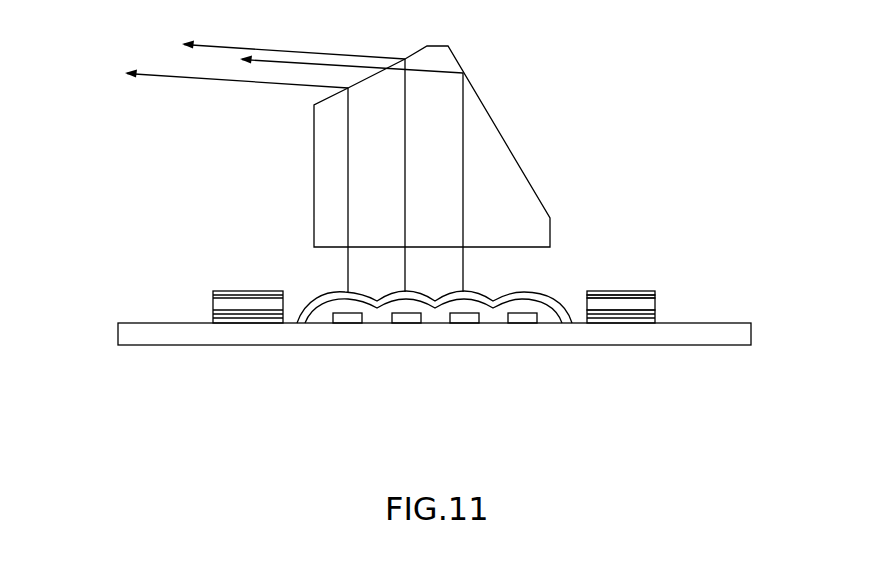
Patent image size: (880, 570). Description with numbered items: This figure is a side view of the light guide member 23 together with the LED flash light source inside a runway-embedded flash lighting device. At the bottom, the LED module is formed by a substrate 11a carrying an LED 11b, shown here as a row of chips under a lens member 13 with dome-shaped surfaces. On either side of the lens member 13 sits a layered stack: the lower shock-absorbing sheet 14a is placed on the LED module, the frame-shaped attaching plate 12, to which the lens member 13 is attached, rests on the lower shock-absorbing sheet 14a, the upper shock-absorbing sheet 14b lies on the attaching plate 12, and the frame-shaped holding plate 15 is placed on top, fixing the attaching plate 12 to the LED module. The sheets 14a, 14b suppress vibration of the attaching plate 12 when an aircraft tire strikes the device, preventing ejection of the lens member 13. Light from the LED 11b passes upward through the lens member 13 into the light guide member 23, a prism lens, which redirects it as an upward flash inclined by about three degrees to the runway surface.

The light guide member 23 is at (497, 150).
The lens member 13 is at (315, 290).
The substrate 11a is at (751, 335).
The LED 11b is at (518, 325).
The frame-shaped holding plate 15 is at (647, 291).
The upper shock-absorbing sheet 14b is at (648, 297).
The frame-shaped attaching plate 12 is at (640, 305).
The lower shock-absorbing sheet 14a is at (655, 318).